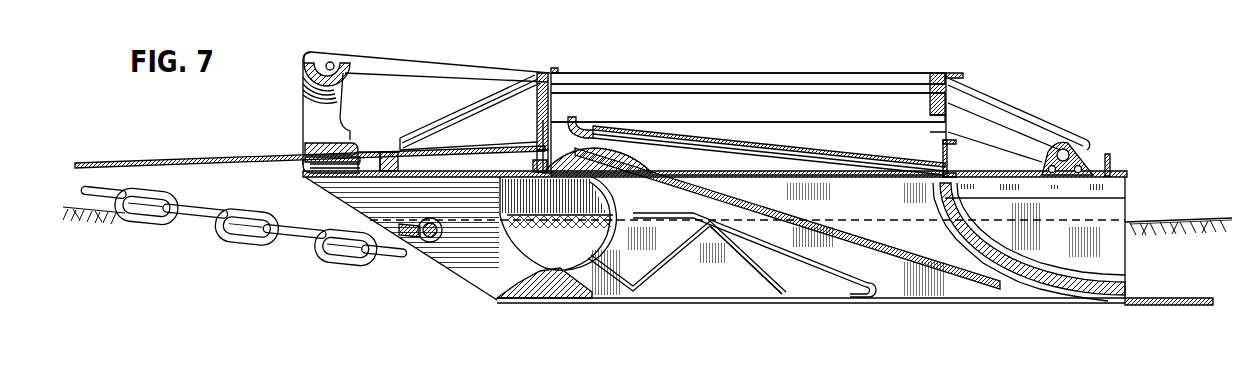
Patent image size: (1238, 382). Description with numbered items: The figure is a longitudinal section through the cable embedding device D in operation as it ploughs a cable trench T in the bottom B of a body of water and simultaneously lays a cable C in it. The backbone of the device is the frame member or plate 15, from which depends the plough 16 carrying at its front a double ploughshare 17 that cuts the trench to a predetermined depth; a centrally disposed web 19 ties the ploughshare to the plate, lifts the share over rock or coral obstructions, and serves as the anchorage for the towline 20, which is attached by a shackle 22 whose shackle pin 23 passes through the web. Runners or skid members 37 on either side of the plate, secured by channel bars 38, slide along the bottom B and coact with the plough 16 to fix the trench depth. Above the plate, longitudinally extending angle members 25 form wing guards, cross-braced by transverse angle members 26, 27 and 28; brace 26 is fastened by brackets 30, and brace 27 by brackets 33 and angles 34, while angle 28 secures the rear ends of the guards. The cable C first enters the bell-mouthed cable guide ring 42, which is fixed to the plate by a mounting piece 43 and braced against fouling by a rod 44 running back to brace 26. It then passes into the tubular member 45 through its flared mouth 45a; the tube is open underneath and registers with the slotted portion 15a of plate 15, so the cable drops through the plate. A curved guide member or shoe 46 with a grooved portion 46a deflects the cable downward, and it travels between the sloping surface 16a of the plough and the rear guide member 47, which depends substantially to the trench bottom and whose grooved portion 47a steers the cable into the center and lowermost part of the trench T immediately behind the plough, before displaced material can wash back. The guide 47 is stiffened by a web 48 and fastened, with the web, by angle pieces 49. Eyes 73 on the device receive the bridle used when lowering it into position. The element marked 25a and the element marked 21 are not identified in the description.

The cable C is at (163, 149).
The cable guide ring 42 is at (303, 62).
The mounting piece 43 is at (306, 160).
The rod 44 is at (437, 61).
The brackets 30 is at (543, 73).
The transverse angle member 26 is at (555, 72).
The cable embedding device D is at (870, 73).
The longitudinally extending angle members 25 is at (681, 69).
The lower rail 25a is at (785, 107).
The brackets 33 is at (938, 87).
The transverse angle member 27 is at (958, 76).
The angles 34 is at (950, 160).
The flared mouth 45a is at (582, 123).
The tubular member 45 is at (693, 147).
The slotted portion 15a is at (773, 173).
The frame member or plate 15 is at (460, 173).
The curved guide member or shoe 46 is at (598, 153).
The grooved portion 46a is at (693, 214).
The sloping surface 16a is at (850, 279).
The plough 16 is at (677, 302).
The diagonal member 21 is at (760, 283).
The runners or skid members 37 is at (618, 230).
The channel bars 38 is at (582, 205).
The web 19 is at (477, 268).
The double ploughshare 17 is at (540, 294).
The rear guide member 47 is at (1068, 291).
The grooved portion 47a is at (957, 243).
The web 48 is at (1107, 276).
The angle pieces 49 is at (1113, 192).
The eyes 73 is at (1067, 148).
The transverse angle member 28 is at (1112, 161).
The bottom B is at (212, 198).
The cable trench T is at (1177, 243).
The towline 20 is at (257, 230).
The shackle 22 is at (397, 229).
The shackle pin 23 is at (423, 236).